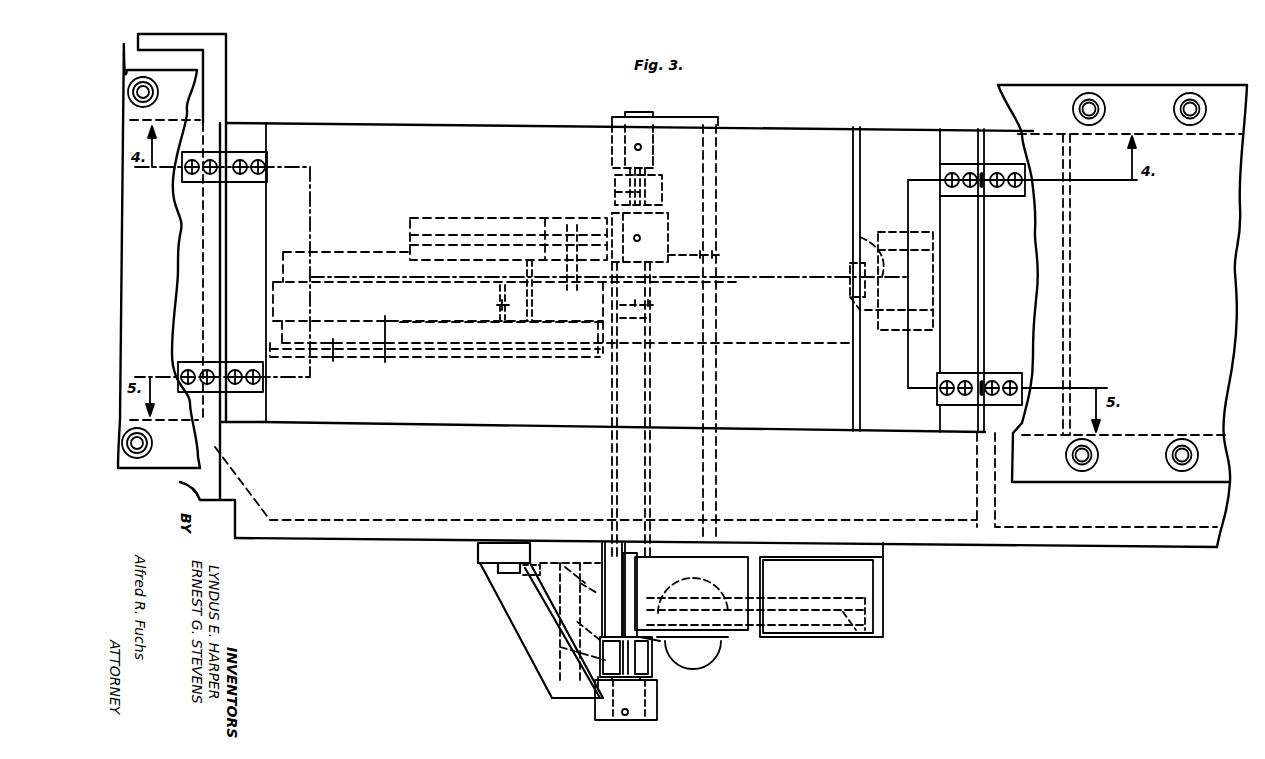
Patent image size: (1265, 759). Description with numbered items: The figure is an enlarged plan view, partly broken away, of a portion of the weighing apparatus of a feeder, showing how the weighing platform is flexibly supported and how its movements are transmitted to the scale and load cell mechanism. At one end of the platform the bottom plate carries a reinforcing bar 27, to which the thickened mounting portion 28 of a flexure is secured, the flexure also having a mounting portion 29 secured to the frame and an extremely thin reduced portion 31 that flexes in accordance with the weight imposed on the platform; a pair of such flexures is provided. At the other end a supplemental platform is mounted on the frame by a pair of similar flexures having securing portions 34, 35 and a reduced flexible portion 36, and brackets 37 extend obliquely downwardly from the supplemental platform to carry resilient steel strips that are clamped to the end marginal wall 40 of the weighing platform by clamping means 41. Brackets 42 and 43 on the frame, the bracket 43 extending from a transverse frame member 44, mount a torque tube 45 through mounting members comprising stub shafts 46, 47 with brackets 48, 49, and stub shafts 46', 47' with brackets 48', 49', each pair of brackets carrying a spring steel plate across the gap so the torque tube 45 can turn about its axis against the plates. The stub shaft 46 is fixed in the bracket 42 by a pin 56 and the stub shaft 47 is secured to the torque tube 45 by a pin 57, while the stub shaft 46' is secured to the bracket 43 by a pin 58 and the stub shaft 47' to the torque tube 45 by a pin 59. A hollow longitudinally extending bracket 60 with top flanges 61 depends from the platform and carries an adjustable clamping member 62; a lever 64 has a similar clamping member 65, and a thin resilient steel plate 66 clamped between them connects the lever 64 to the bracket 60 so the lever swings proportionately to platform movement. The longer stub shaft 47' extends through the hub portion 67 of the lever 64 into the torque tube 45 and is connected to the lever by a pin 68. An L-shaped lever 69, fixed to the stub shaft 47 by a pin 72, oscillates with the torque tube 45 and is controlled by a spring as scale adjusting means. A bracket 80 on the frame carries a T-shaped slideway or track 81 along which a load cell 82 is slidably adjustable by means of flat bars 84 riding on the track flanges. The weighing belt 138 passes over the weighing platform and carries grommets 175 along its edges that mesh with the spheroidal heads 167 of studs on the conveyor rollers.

The reinforcing bar 27 is at (263, 135).
The thickened mounting portion 28 is at (252, 152).
The mounting portion 29 is at (192, 178).
The reduced portion 31 is at (230, 180).
The securing portion 34 is at (958, 196).
The securing portion 35 is at (1010, 196).
The reduced flexible portion 36 is at (982, 173).
The bracket 37 is at (922, 318).
The end marginal wall 40 is at (845, 292).
The clamping means 41 is at (893, 266).
The bracket 42 is at (530, 625).
The bracket 43 is at (700, 124).
The transverse frame member 44 is at (712, 190).
The torque tube 45 is at (650, 470).
The stub shaft 46 is at (648, 700).
The stub shaft 46' is at (657, 103).
The stub shaft 47 is at (589, 590).
The stub shaft 47' is at (654, 324).
The bracket 48 is at (642, 664).
The bracket 48' is at (654, 186).
The bracket 49 is at (576, 700).
The bracket 49' is at (593, 186).
The pin 56 is at (623, 715).
The pin 57 is at (632, 573).
The pin 58 is at (641, 147).
The pin 59 is at (653, 305).
The hollow longitudinally extending bracket 60 is at (385, 362).
The top flanges 61 is at (345, 255).
The clamping member 62 is at (496, 306).
The lever 64 is at (585, 235).
The clamping member 65 is at (552, 225).
The thin resilient steel plate 66 is at (536, 283).
The hub portion 67 is at (723, 257).
The pin 68 is at (642, 236).
The L-shaped lever 69 is at (540, 655).
The pin 72 is at (650, 645).
The bracket 80 is at (883, 583).
The slideway or track 81 is at (858, 637).
The load cell 82 is at (700, 652).
The flat bars 84 is at (700, 578).
The weighing belt 138 is at (1145, 468).
The spheroidal heads 167 is at (143, 92).
The grommets 175 is at (152, 100).